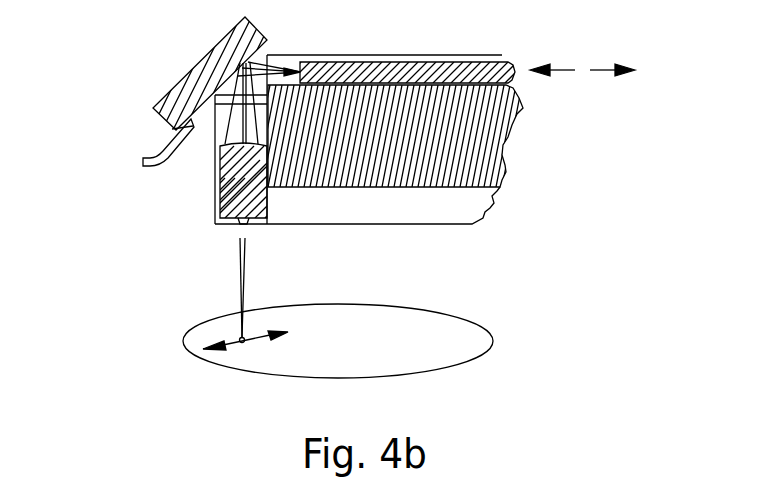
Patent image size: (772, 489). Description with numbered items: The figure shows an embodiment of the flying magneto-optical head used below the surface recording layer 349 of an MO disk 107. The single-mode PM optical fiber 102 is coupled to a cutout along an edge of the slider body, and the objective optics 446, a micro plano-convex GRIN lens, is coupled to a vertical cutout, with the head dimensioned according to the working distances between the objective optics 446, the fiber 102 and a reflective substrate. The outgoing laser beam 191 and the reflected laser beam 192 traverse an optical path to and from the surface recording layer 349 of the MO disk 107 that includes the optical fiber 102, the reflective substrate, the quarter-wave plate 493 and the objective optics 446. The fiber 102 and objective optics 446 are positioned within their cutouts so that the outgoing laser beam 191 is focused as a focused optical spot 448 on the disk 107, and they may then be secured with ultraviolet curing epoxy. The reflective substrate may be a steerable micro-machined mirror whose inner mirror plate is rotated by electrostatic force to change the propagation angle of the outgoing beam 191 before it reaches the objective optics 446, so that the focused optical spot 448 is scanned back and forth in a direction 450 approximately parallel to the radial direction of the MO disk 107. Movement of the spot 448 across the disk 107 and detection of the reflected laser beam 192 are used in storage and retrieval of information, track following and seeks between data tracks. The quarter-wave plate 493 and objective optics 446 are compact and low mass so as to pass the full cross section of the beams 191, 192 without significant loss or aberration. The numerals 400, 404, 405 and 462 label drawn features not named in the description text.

The single-mode PM optical fiber 102 is at (407, 53).
The MO disk 107 is at (305, 350).
The outgoing laser beam 191 is at (563, 72).
The reflected laser beam 192 is at (612, 72).
The surface recording layer 349 is at (402, 359).
The mirror 400 is at (165, 102).
The arm 404 is at (110, 159).
The flexure 405 is at (143, 158).
The objective optics 446 is at (237, 187).
The focused optical spot 448 is at (245, 343).
The direction 450 is at (235, 345).
The aperture 462 is at (217, 222).
The quarter-wave plate 493 is at (226, 84).